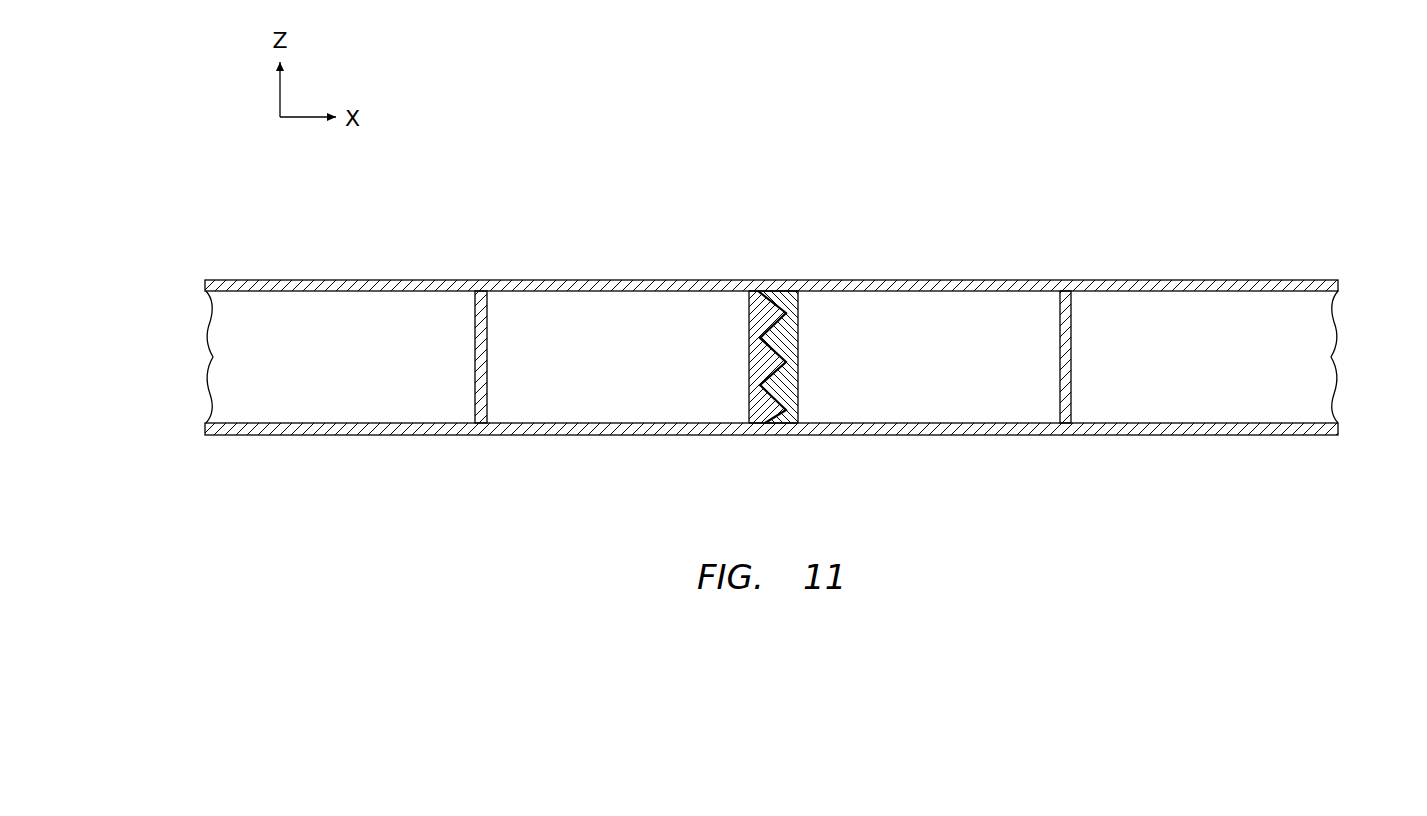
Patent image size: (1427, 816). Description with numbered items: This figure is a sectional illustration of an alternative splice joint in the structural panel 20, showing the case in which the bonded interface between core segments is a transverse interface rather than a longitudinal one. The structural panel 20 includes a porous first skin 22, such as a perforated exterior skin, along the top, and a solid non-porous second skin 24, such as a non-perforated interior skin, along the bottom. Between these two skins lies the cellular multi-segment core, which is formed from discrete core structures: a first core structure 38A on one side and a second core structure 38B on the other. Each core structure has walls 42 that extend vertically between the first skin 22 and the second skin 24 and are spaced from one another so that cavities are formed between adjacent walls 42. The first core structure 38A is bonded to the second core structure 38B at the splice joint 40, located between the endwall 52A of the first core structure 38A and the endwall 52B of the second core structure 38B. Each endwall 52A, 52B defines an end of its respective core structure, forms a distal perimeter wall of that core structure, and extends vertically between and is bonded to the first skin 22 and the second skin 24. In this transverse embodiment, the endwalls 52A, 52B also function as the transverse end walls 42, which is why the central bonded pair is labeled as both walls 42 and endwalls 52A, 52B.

The structural panel 20 is at (1066, 182).
The first skin 22 is at (205, 282).
The second skin 24 is at (203, 437).
The first core structure 38A is at (190, 291).
The second core structure 38B is at (1347, 291).
The splice joint 40 is at (773, 294).
The wall 42 is at (487, 405).
The endwall of first core structure 52A is at (773, 312).
The endwall of second core structure 52B is at (798, 329).